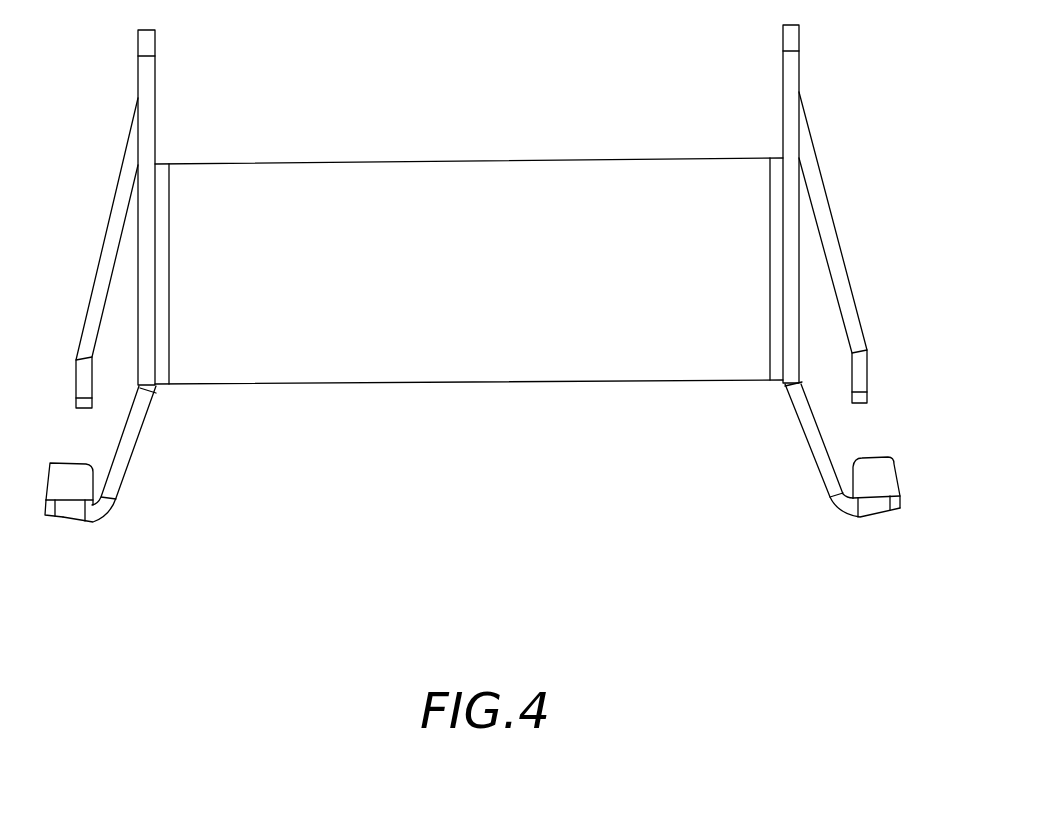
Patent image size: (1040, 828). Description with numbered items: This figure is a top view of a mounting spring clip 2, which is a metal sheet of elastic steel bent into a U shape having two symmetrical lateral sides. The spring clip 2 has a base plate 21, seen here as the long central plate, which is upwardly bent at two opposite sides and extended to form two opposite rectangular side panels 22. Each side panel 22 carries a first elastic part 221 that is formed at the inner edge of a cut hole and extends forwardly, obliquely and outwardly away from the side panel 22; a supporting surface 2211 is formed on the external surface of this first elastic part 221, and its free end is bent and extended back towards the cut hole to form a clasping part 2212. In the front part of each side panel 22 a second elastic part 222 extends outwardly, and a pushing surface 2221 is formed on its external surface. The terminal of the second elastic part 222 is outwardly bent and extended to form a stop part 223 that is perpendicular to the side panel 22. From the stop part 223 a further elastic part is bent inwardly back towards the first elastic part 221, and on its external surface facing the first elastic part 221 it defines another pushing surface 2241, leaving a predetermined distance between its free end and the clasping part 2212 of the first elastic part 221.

The spring clip 2 is at (553, 122).
The base plate 21 is at (477, 173).
The side panel 22 is at (792, 72).
The first elastic part 221 is at (818, 185).
The supporting surface 2211 is at (842, 253).
The clasping part 2212 is at (862, 373).
The second elastic part 222 is at (817, 445).
The pushing surface 2221 is at (822, 425).
The stop part 223 is at (873, 507).
The pushing surface 2241 is at (888, 477).